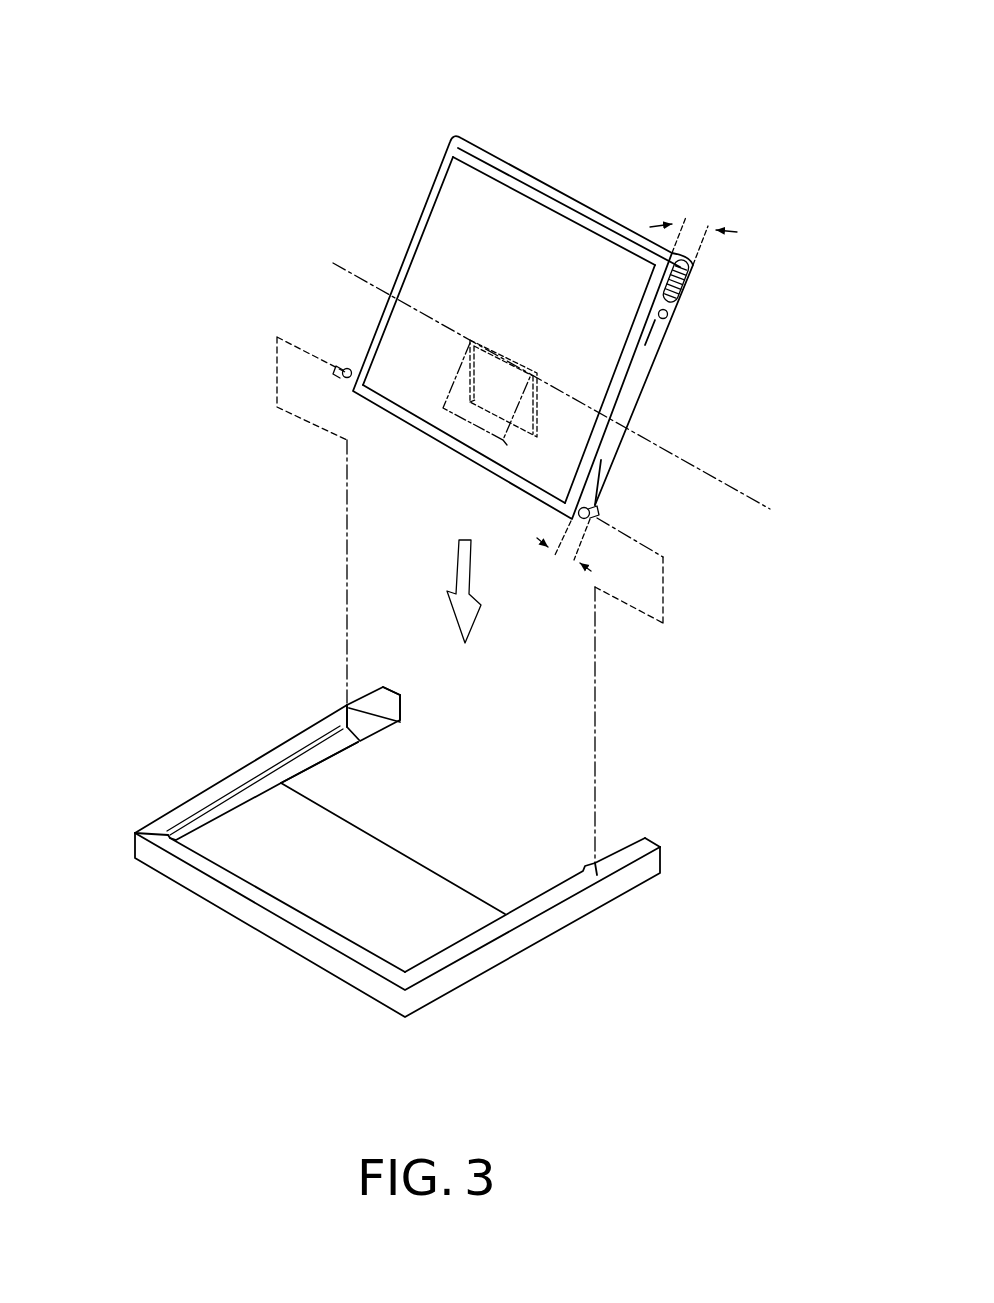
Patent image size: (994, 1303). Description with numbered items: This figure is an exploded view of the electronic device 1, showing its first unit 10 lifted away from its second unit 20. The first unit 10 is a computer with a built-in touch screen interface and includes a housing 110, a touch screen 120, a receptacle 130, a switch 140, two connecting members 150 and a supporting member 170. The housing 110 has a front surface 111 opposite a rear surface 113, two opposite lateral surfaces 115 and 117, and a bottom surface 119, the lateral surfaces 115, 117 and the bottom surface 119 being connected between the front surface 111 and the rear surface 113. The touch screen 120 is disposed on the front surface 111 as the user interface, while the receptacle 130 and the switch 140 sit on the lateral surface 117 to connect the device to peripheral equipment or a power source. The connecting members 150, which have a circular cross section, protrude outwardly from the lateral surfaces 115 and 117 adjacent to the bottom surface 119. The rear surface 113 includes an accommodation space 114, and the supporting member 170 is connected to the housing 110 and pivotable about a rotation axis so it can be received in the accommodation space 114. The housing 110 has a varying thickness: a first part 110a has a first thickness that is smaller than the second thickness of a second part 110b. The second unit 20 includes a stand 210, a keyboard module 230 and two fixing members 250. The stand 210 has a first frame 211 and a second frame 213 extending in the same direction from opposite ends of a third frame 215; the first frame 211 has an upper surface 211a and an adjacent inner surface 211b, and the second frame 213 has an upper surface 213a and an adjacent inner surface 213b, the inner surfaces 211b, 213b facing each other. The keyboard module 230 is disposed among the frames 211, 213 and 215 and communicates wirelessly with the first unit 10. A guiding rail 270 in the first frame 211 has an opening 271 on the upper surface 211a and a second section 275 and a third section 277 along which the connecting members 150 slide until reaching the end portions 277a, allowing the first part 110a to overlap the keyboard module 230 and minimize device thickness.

The electronic device 1 is at (110, 50).
The first unit 10 is at (394, 88).
The housing 110 is at (610, 215).
The first part 110a is at (603, 477).
The second part 110b is at (672, 360).
The front surface 111 is at (478, 140).
The rear surface 113 is at (557, 237).
The accommodation space 114 is at (452, 415).
The lateral surface 115 is at (427, 192).
The lateral surface 117 is at (637, 378).
The bottom surface 119 is at (497, 478).
The touch screen 120 is at (513, 213).
The receptacle 130 is at (682, 328).
The switch 140 is at (686, 295).
The connecting member 150 is at (345, 366).
The supporting member 170 is at (537, 420).
The second unit 20 is at (126, 796).
The stand 210 is at (542, 946).
The first frame 211 is at (230, 787).
The upper surface 211a is at (383, 689).
The inner surface 211b is at (388, 712).
The second frame 213 is at (477, 970).
The upper surface 213a is at (642, 846).
The inner surface 213b is at (638, 838).
The third frame 215 is at (240, 905).
The keyboard module 230 is at (407, 927).
The fixing member 250 is at (370, 735).
The guiding rail 270 is at (286, 754).
The opening 271 is at (352, 706).
The second section 275 is at (340, 747).
The third section 277 is at (310, 742).
The end portion 277a is at (135, 835).